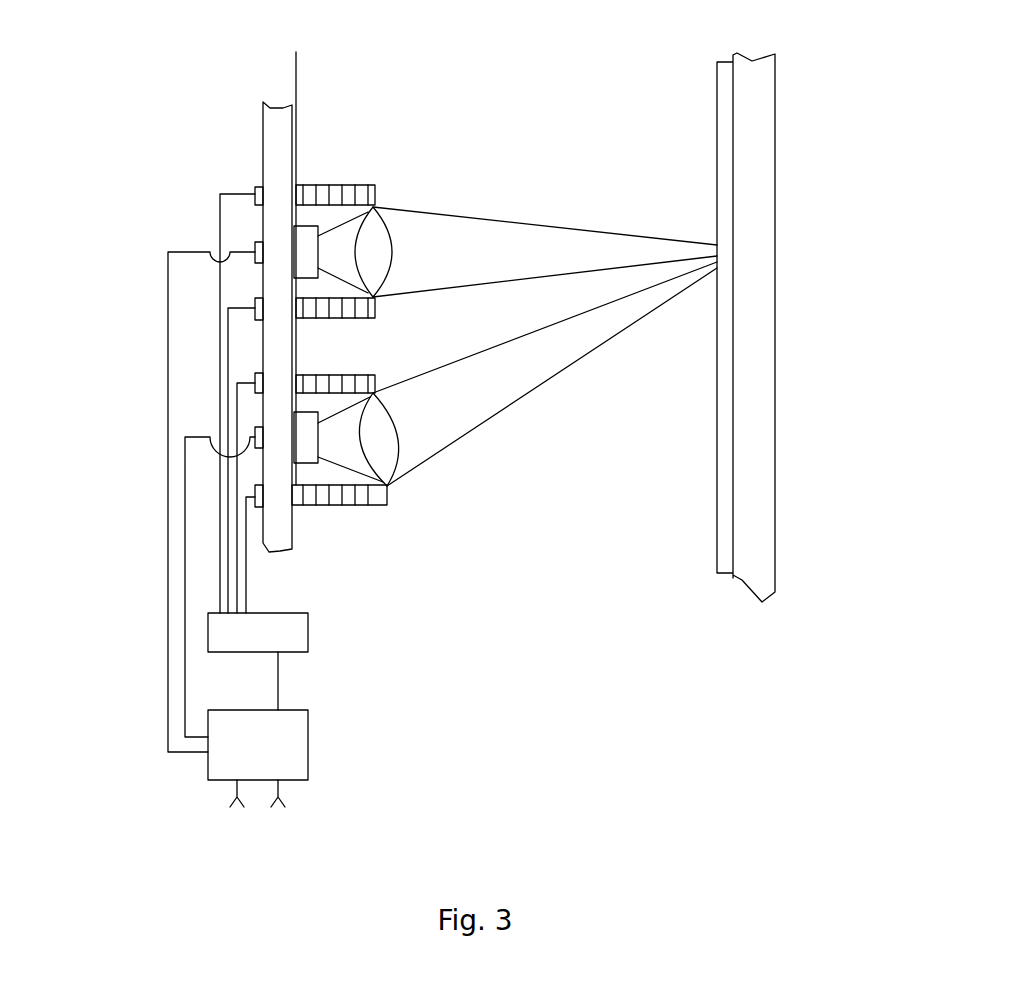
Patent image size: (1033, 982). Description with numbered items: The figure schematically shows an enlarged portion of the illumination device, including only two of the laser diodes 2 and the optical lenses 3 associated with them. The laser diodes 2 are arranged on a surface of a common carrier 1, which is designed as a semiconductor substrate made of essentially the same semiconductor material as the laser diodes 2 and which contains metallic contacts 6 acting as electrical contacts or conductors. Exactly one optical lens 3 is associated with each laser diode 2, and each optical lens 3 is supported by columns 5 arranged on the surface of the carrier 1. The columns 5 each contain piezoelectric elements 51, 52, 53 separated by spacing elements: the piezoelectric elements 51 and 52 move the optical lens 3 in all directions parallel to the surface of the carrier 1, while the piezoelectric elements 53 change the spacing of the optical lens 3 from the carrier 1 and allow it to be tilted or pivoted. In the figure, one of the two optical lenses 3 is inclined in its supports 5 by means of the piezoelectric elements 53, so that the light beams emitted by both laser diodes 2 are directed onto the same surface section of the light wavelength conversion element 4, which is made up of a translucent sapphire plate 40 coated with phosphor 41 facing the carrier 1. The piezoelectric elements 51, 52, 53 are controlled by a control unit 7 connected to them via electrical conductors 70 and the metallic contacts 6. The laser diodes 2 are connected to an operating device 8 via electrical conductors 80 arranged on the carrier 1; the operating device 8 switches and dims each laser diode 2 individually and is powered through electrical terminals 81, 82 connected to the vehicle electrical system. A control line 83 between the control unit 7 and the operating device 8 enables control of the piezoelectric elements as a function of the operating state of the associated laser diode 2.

The carrier 1 is at (275, 130).
The laser diode 2 is at (306, 252).
The optical lens 3 is at (370, 251).
The light wavelength conversion element 4 is at (793, 381).
The column 5 is at (352, 185).
The metallic contacts 6 is at (257, 193).
The control unit 7 is at (293, 633).
The operating device 8 is at (288, 750).
The sapphire plate 40 is at (757, 167).
The phosphor 41 is at (722, 563).
The piezoelectric element 51 is at (300, 252).
The piezoelectric element 52 is at (323, 193).
The piezoelectric element 53 is at (375, 187).
The electrical conductors 70 is at (246, 582).
The electrical conductors 80 is at (168, 602).
The electrical terminal 81 is at (237, 815).
The electrical terminal 82 is at (281, 815).
The control line 83 is at (278, 680).